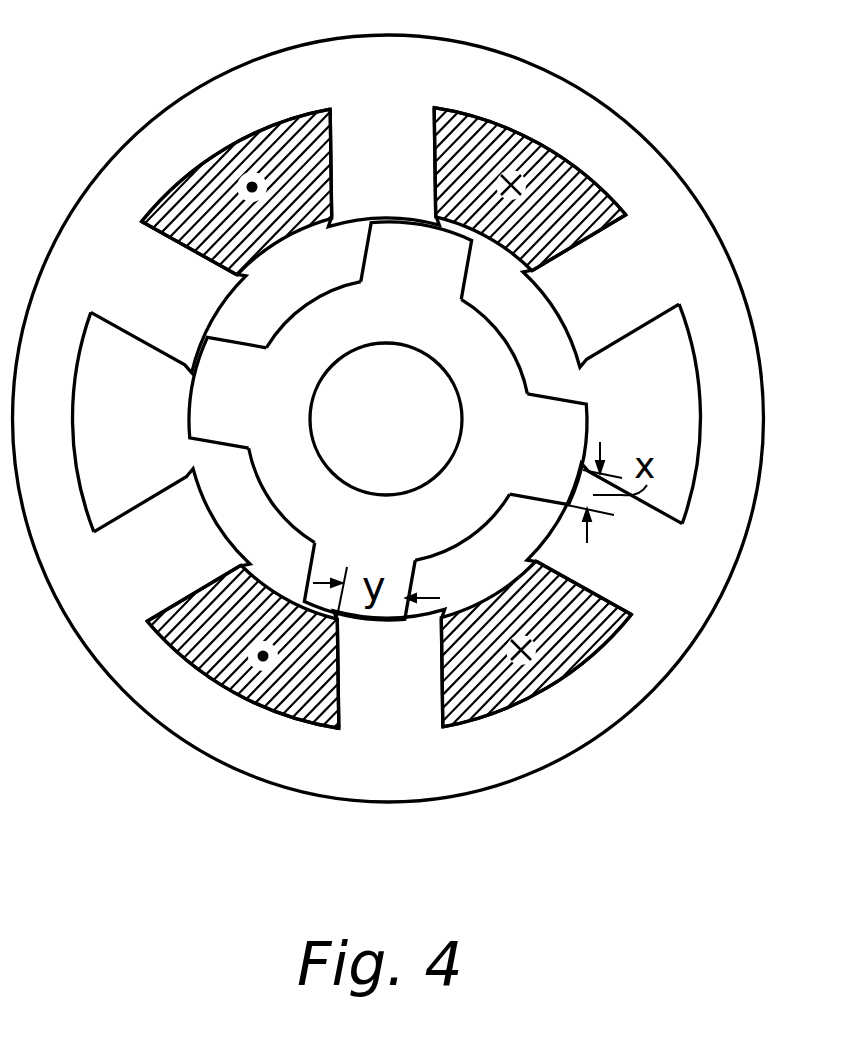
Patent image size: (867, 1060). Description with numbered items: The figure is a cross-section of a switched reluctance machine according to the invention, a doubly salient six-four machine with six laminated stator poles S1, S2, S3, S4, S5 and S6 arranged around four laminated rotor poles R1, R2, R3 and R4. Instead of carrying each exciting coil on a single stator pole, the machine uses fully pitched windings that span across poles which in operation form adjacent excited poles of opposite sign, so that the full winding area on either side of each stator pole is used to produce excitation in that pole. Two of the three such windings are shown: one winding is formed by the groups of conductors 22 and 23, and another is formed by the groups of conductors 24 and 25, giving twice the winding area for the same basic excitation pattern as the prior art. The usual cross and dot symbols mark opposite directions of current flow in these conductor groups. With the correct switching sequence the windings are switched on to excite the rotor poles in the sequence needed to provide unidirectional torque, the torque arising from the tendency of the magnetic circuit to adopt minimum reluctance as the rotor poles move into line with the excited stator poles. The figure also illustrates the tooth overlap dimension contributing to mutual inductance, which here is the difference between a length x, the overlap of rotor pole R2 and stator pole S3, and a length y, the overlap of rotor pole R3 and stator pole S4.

The group of conductors 22 is at (277, 152).
The group of conductors 23 is at (490, 688).
The group of conductors 24 is at (518, 143).
The group of conductors 25 is at (278, 688).
The stator pole S1 is at (383, 156).
The stator pole S2 is at (597, 286).
The stator pole S3 is at (626, 554).
The stator pole S4 is at (387, 678).
The stator pole S5 is at (168, 545).
The stator pole S6 is at (168, 288).
The rotor pole R1 is at (408, 258).
The rotor pole R2 is at (538, 449).
The rotor pole R3 is at (398, 569).
The rotor pole R4 is at (231, 387).